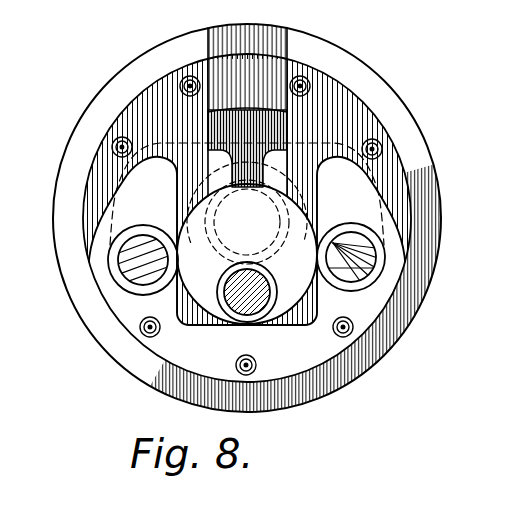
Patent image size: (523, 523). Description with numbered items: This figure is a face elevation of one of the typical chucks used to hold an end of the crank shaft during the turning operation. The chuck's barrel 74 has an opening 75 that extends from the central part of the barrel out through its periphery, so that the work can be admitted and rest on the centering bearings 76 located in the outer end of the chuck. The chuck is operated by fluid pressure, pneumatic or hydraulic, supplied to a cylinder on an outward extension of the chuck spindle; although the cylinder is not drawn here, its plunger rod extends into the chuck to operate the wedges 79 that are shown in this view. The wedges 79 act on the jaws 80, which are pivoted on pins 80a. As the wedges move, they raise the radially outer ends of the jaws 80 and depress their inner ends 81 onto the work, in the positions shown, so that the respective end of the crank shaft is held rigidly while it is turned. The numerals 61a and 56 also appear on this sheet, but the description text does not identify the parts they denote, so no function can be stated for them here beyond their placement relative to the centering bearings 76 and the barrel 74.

The barrel 74 is at (423, 188).
The opening 75 is at (265, 77).
The centering bearings 76 is at (265, 243).
The wedges 79 is at (137, 273).
The jaws 80 is at (175, 210).
The pins 80a is at (310, 218).
The inner ends of the jaws 81 is at (270, 203).
The shaft 61a is at (257, 306).
The cover 56 is at (272, 5).